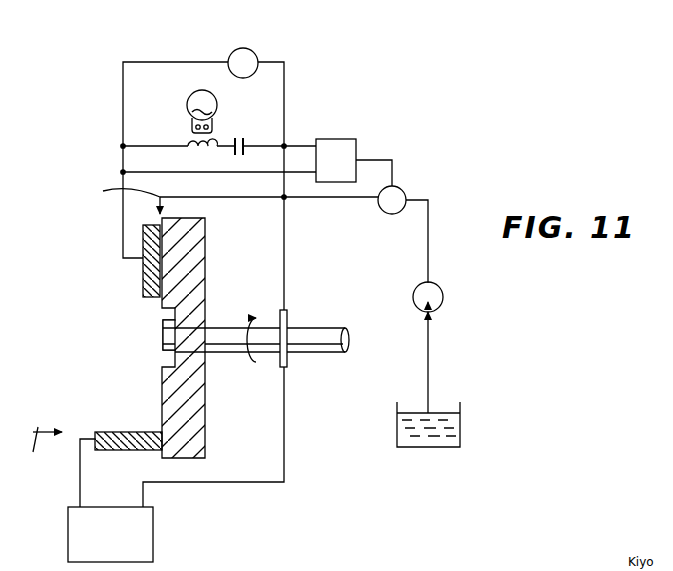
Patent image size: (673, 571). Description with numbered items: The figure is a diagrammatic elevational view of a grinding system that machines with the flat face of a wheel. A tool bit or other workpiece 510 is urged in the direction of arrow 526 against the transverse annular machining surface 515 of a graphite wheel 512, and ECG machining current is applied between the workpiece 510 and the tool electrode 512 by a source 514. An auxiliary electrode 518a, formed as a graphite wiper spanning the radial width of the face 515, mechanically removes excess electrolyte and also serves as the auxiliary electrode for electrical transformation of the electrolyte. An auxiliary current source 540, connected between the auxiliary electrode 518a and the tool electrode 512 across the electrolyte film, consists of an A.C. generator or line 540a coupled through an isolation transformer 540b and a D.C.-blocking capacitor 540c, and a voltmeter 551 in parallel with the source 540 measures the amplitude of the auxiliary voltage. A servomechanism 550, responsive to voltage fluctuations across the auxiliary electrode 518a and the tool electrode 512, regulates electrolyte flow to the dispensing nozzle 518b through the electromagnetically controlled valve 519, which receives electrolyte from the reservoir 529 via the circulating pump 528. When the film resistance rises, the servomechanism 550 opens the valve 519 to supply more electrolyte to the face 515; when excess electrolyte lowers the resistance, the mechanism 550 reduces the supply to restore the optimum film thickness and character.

The workpiece 510 is at (118, 430).
The graphite wheel 512 is at (205, 388).
The source 514 is at (145, 532).
The transverse annular machining surface 515 is at (162, 390).
The auxiliary electrode 518a is at (143, 276).
The dispensing nozzle 518b is at (106, 192).
The electromagnetically controlled valve 519 is at (398, 219).
The arrow 526 is at (37, 454).
The circulating pump 528 is at (444, 297).
The reservoir 529 is at (460, 425).
The auxiliary current source 540 is at (182, 136).
The A.C. generator 540a is at (202, 90).
The isolation transformer 540b is at (218, 140).
The D.C.-blocking capacitor 540c is at (248, 142).
The servomechanism 550 is at (356, 145).
The voltmeter 551 is at (244, 48).